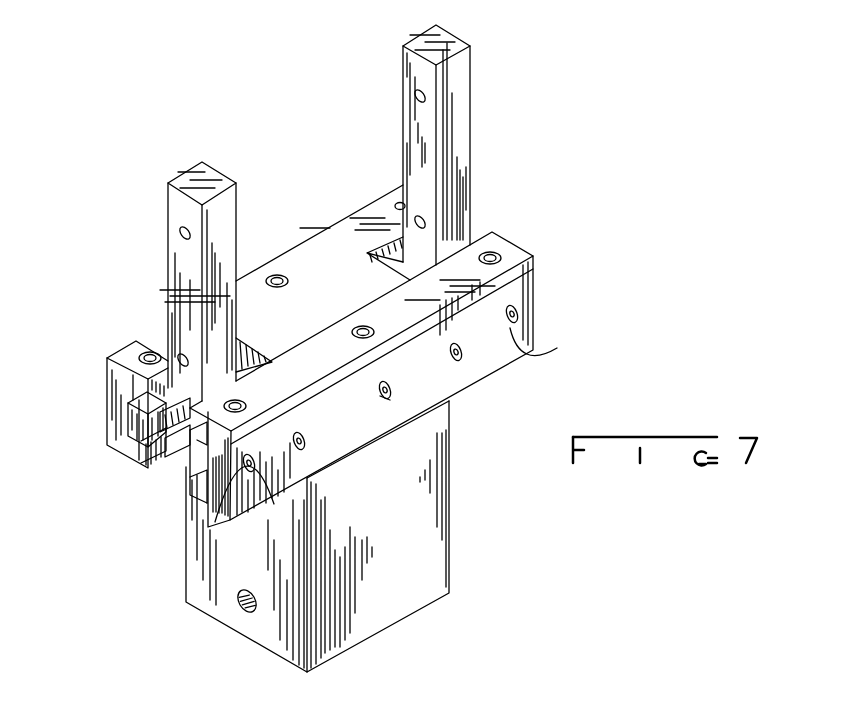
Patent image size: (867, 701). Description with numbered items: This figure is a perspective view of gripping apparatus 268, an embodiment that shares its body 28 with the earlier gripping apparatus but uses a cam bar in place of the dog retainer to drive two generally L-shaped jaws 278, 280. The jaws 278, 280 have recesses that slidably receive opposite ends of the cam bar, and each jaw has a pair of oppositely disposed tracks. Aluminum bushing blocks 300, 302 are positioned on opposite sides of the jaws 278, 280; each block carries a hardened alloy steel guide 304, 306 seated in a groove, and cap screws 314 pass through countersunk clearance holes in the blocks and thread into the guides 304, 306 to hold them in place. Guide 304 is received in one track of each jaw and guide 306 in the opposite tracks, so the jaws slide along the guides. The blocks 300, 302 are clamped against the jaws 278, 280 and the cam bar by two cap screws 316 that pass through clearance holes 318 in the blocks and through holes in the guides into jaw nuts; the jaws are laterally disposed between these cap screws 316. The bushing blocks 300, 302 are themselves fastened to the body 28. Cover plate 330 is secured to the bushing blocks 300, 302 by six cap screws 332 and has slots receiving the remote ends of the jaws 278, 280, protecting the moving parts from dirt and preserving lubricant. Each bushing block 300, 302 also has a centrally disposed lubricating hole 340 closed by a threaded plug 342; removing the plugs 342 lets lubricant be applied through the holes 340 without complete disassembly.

The body 28 is at (440, 536).
The gripping apparatus 268 is at (572, 245).
The L-shaped jaw 278 is at (452, 82).
The L-shaped jaw 280 is at (170, 193).
The bushing block 300 is at (212, 495).
The bushing block 302 is at (112, 405).
The guide 304 is at (188, 427).
The guide 306 is at (137, 425).
The cap screw 314 is at (460, 360).
The cap screw 316 is at (513, 300).
The clearance hole 318 is at (406, 431).
The cover plate 330 is at (345, 235).
The cap screw 332 is at (398, 200).
The lubricating hole 340 is at (392, 386).
The plug 342 is at (380, 396).